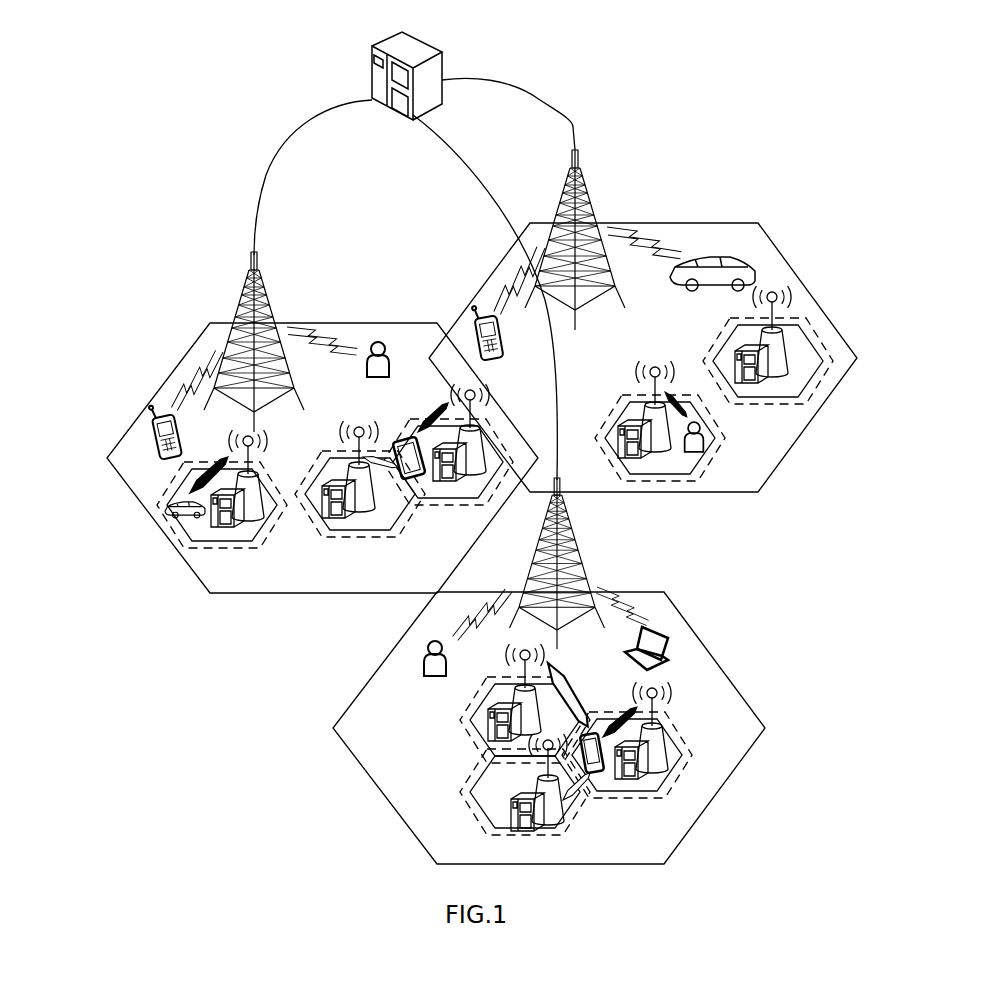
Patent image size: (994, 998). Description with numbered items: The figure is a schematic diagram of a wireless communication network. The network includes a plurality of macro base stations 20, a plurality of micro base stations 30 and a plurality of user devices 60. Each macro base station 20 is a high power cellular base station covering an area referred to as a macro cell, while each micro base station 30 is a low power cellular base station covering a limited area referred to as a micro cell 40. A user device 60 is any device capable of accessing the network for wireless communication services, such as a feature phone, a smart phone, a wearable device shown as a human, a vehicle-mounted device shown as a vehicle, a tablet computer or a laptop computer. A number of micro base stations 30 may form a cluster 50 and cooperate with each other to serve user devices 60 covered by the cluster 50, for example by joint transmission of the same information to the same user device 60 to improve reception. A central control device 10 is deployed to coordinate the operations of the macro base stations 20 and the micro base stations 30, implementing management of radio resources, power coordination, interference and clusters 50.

The central control device 10 is at (372, 50).
The macro base station 20 is at (247, 290).
The micro base station 30 is at (777, 337).
The micro cell 40 is at (813, 387).
The cluster 50 is at (187, 343).
The user device 60 is at (157, 410).